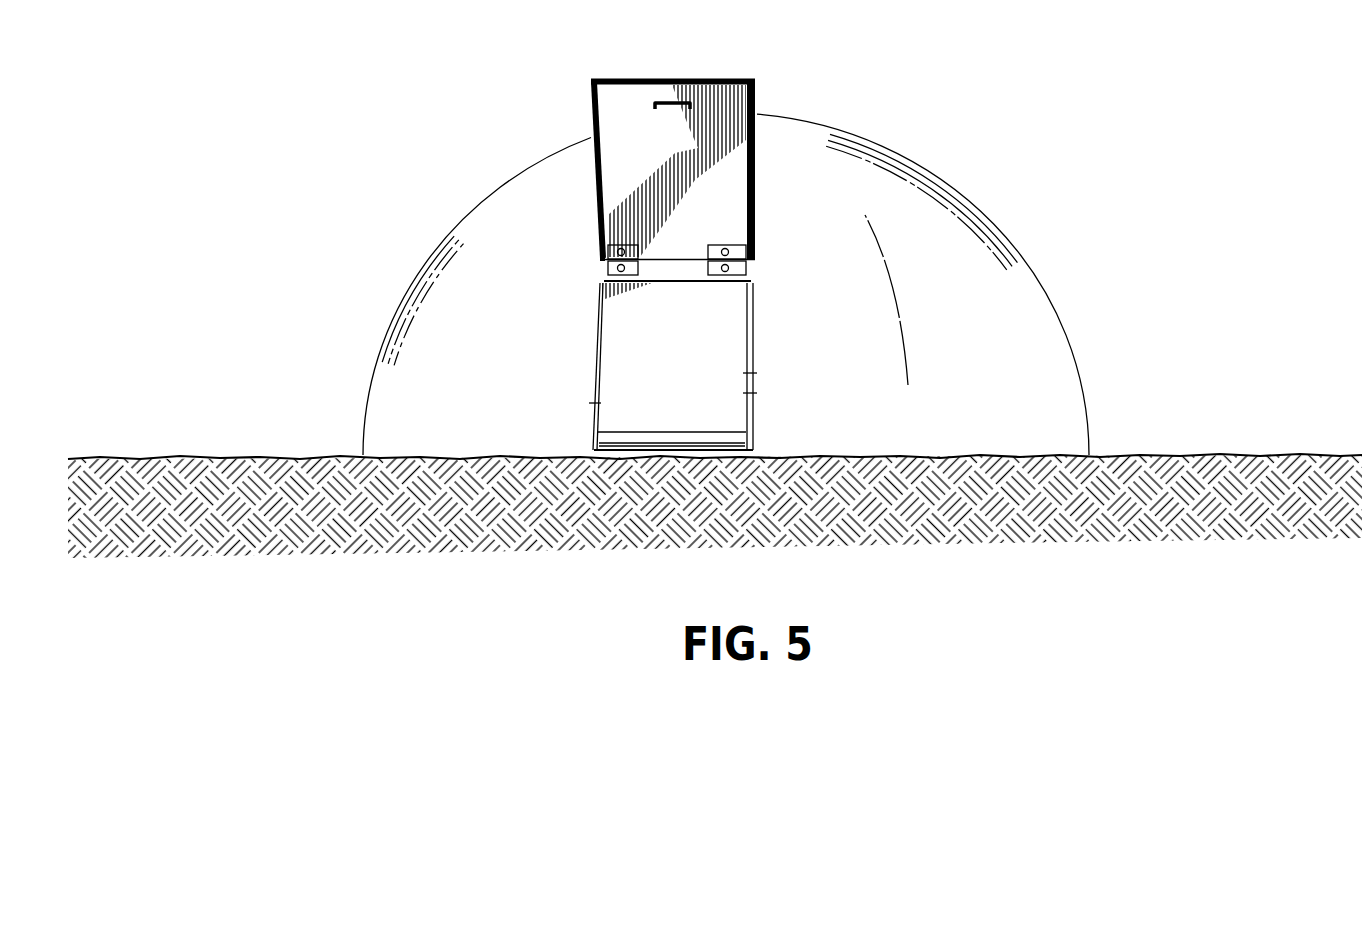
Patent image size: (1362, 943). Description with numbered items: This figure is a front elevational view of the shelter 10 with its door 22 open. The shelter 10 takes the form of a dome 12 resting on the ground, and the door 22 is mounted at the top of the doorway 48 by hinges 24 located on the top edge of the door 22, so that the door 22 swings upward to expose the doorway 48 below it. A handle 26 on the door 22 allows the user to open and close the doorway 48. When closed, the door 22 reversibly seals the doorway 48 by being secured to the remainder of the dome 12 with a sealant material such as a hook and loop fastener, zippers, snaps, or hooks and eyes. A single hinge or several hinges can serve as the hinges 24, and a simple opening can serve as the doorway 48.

The shelter 10 is at (726, 232).
The dome 12 is at (548, 169).
The door 22 is at (692, 199).
The hinges 24 is at (752, 281).
The handle 26 is at (656, 103).
The doorway 48 is at (622, 340).